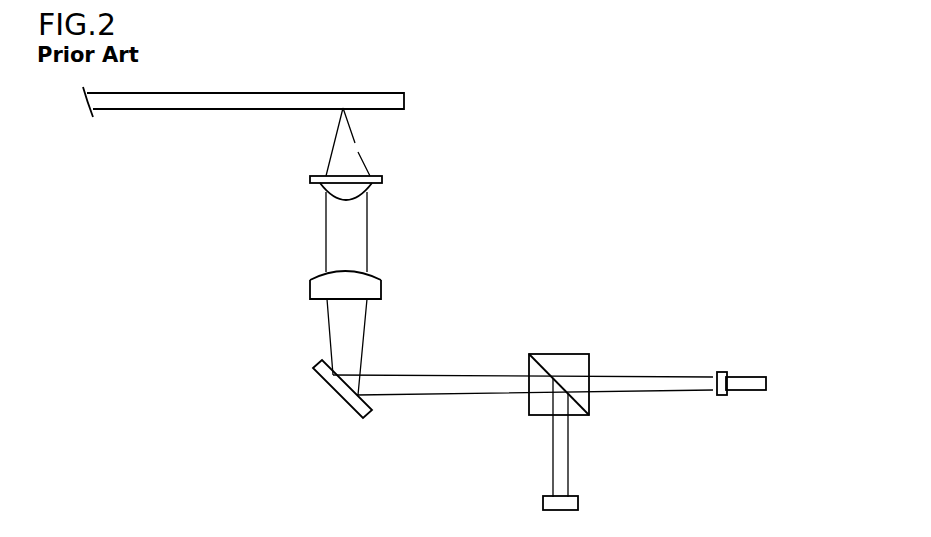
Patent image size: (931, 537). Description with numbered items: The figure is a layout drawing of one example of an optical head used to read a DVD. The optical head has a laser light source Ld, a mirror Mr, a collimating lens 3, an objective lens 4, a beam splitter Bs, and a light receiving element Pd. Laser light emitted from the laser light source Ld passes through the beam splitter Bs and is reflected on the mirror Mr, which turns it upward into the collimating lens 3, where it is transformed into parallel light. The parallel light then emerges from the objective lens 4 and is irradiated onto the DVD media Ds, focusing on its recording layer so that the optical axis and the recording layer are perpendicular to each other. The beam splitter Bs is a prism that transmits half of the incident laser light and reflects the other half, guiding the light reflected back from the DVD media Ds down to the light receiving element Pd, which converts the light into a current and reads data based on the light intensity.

The DVD media Ds is at (300, 101).
The objective lens 4 is at (335, 188).
The collimating lens 3 is at (327, 287).
The mirror Mr is at (340, 388).
The beam splitter Bs is at (570, 361).
The light receiving element Pd is at (568, 499).
The laser light source Ld is at (748, 385).